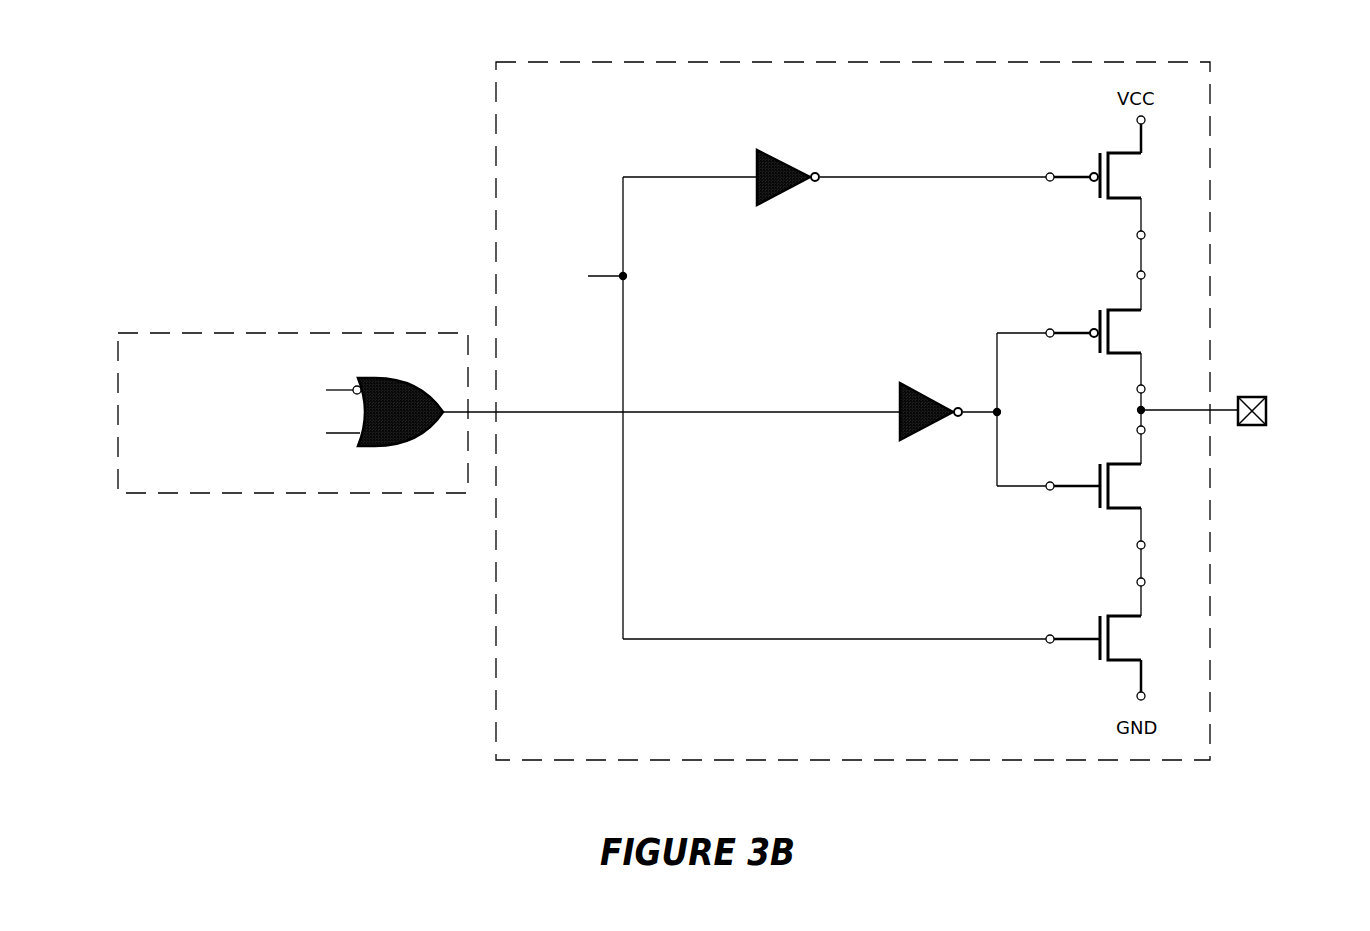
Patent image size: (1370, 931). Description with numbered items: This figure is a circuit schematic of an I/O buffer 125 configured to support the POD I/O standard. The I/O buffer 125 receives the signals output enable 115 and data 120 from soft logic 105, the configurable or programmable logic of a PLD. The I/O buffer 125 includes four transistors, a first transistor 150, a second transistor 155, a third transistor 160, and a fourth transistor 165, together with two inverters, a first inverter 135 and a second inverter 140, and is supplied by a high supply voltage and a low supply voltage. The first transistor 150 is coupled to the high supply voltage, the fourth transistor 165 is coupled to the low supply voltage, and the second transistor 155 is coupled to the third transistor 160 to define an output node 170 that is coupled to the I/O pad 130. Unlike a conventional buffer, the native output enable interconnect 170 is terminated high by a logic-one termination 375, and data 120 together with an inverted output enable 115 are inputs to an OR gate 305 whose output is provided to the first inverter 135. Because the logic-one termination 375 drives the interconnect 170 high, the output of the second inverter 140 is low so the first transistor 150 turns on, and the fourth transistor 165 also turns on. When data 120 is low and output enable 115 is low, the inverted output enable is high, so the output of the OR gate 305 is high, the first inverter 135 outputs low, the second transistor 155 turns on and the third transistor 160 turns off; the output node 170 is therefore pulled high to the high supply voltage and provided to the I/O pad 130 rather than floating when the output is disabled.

The soft logic 105 is at (148, 333).
The output enable 115 is at (245, 390).
The data 120 is at (293, 433).
The OR gate 305 is at (370, 378).
The I/O buffer 125 is at (1093, 61).
The I/O pad 130 is at (1252, 397).
The inverter 135 is at (906, 384).
The inverter 140 is at (785, 160).
The transistor M1 150 is at (1150, 173).
The transistor M2 155 is at (1150, 329).
The transistor M3 160 is at (1150, 482).
The transistor M4 165 is at (1150, 634).
The output enable interconnect / output node 170 is at (640, 177).
The "1" 375 is at (567, 276).